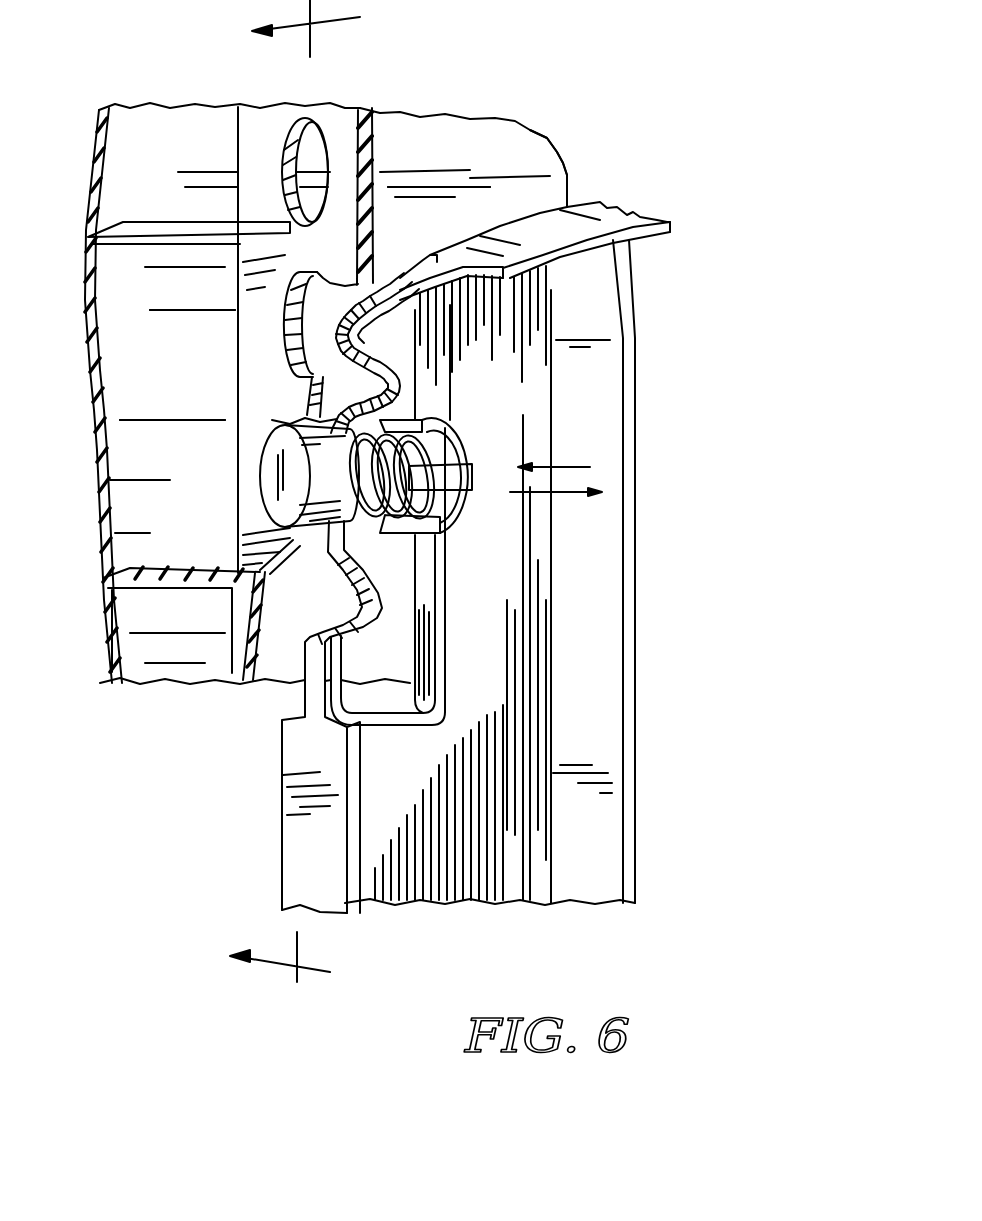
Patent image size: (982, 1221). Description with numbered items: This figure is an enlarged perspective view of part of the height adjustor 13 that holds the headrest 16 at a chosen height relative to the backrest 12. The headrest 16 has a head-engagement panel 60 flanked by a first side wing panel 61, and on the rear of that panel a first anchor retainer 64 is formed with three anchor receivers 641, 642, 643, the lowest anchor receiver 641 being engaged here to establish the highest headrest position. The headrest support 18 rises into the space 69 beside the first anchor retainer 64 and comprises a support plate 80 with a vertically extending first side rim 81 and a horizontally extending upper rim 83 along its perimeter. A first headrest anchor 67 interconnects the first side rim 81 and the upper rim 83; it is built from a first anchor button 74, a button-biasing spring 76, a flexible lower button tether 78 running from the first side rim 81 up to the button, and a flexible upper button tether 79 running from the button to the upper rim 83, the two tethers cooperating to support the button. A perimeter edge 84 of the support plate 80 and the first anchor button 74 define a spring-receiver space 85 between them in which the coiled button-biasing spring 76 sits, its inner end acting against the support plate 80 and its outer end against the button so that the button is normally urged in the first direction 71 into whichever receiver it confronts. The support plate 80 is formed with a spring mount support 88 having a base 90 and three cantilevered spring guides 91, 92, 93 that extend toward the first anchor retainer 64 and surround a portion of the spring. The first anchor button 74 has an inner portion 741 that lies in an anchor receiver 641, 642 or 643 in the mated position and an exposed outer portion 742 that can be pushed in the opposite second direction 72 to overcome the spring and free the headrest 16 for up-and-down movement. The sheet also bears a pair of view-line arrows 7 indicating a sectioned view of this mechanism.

The section line 7- 7 is at (305, 498).
The backrest 12 is at (650, 390).
The height adjustor 13 is at (262, 370).
The headrest 16 is at (560, 137).
The headrest support 18 is at (650, 537).
The head-engagement panel 60 is at (545, 183).
The first side wing panel 61 is at (127, 510).
The first anchor retainer 64 is at (335, 137).
The first headrest anchor 67 is at (247, 459).
The space 69 is at (467, 150).
The first direction 71 is at (570, 466).
The second direction 72 is at (568, 492).
The first anchor button 74 is at (276, 442).
The button-biasing spring 76 is at (412, 430).
The flexible lower button tether 78 is at (384, 624).
The flexible upper button tether 79 is at (400, 332).
The support plate 80 is at (470, 682).
The first side rim 81 is at (303, 760).
The upper rim 83 is at (524, 226).
The perimeter edge 84 is at (452, 597).
The spring-receiver space 85 is at (356, 556).
The spring mount support 88 is at (478, 425).
The base 90 is at (438, 523).
The spring guide 91 is at (466, 481).
The spring guide 92 is at (402, 535).
The spring guide 93 is at (407, 428).
The anchor receiver 641 is at (303, 510).
The anchor receiver 642 is at (290, 284).
The anchor receiver 643 is at (285, 165).
The inner portion 741 is at (338, 425).
The outer portion 742 is at (305, 470).